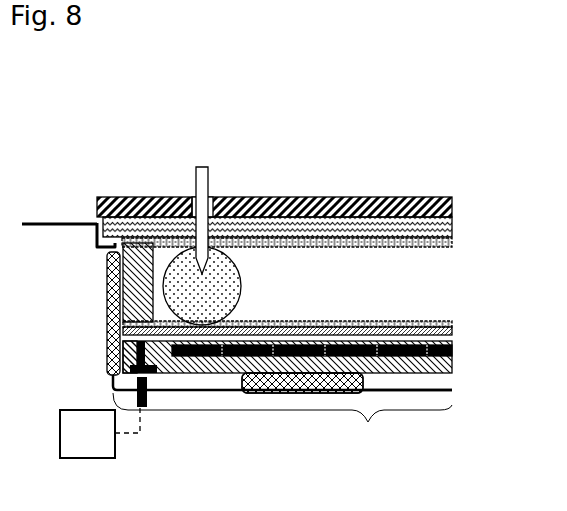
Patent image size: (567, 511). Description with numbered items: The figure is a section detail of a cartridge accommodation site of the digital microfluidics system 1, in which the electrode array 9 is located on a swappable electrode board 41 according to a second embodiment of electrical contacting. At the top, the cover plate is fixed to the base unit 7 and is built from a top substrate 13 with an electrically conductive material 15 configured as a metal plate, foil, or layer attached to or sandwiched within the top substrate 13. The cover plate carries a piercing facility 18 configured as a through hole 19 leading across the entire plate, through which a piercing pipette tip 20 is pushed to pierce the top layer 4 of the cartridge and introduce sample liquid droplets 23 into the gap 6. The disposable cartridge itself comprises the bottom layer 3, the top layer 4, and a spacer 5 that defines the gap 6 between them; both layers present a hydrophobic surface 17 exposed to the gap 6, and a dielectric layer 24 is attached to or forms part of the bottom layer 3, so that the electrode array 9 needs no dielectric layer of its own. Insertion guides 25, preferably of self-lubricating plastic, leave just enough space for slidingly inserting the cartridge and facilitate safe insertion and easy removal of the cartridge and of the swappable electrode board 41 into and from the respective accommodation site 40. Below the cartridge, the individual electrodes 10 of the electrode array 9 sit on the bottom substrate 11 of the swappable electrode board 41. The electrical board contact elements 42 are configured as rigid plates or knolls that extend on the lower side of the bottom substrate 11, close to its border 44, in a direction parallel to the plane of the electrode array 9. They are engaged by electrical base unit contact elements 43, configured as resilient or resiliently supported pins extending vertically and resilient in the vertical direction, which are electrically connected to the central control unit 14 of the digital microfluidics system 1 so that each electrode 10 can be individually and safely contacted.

The digital microfluidics system 1 is at (409, 131).
The bottom layer 3 is at (122, 331).
The top layer 4 is at (97, 245).
The spacer 5 is at (130, 280).
The gap 6 is at (298, 293).
The base unit 7 is at (70, 222).
The electrode array 9 is at (224, 376).
The electrodes 10 is at (252, 394).
The bottom substrate 11 is at (295, 394).
The top substrate 13 is at (333, 210).
The central control unit 14 is at (100, 433).
The electrically conductive material 15 is at (398, 216).
The hydrophobic surface 17 is at (388, 249).
The piercing facility 18 is at (274, 220).
The through hole 19 is at (192, 198).
The piercing pipette tip 20 is at (204, 188).
The liquid droplets 23 is at (198, 291).
The dielectric layer 24 is at (122, 341).
The insertion guides 25 is at (108, 297).
The accommodation site 40 is at (234, 395).
The swappable electrode board 41 is at (403, 362).
The electrical board contact elements 42 is at (157, 370).
The electrical base unit contact elements 43 is at (148, 385).
The border 44 is at (115, 356).